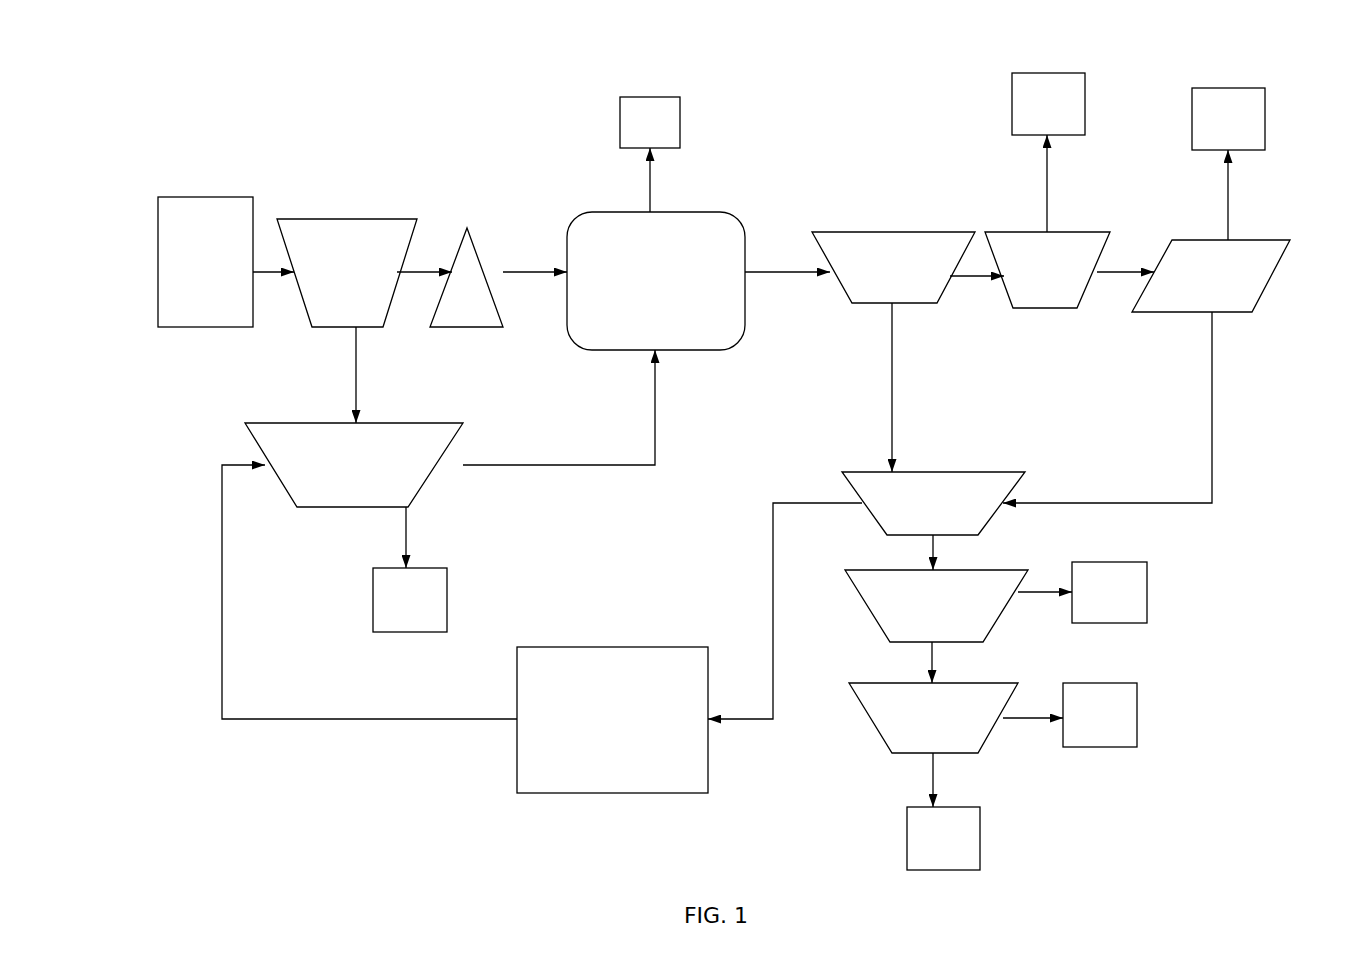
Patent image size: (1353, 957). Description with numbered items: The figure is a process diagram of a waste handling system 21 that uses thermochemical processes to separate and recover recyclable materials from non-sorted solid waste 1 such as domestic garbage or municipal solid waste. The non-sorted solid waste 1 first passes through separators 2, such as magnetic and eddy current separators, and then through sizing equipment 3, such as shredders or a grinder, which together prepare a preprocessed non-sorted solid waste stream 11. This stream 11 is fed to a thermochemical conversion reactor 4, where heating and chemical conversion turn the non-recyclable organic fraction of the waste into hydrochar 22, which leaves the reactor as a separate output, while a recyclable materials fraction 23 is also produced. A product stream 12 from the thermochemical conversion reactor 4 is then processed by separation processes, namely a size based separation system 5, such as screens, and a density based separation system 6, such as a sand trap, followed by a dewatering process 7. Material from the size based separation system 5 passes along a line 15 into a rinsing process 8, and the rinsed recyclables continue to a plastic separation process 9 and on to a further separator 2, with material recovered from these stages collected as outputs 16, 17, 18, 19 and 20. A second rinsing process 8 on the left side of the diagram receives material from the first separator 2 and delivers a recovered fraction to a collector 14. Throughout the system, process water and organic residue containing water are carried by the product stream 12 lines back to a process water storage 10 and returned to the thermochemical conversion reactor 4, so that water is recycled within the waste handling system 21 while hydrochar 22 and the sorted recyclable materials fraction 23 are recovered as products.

The non-sorted solid waste 1 is at (192, 245).
The separators 2 is at (335, 252).
The sizing equipment 3 is at (472, 267).
The thermochemical conversion reactor 4 is at (658, 252).
The size based separation system 5 is at (872, 252).
The density based separation system 6 is at (1048, 268).
The dewatering process 7 is at (1210, 283).
The rinsing process 8 is at (292, 450).
The plastic separation process 9 is at (902, 602).
The process water storage 10 is at (609, 733).
The preprocessed non-sorted solid waste stream 11 is at (517, 270).
The product stream 12 is at (768, 270).
The product collector 14 is at (393, 603).
The transfer line 15 is at (895, 422).
The product collector 16 is at (1033, 103).
The product collector 17 is at (1223, 115).
The product collector 18 is at (1122, 603).
The product collector 19 is at (1105, 727).
The product collector 20 is at (955, 845).
The waste handling system 21 is at (323, 132).
The hydrochar 22 is at (650, 113).
The recyclable materials fraction 23 is at (752, 273).